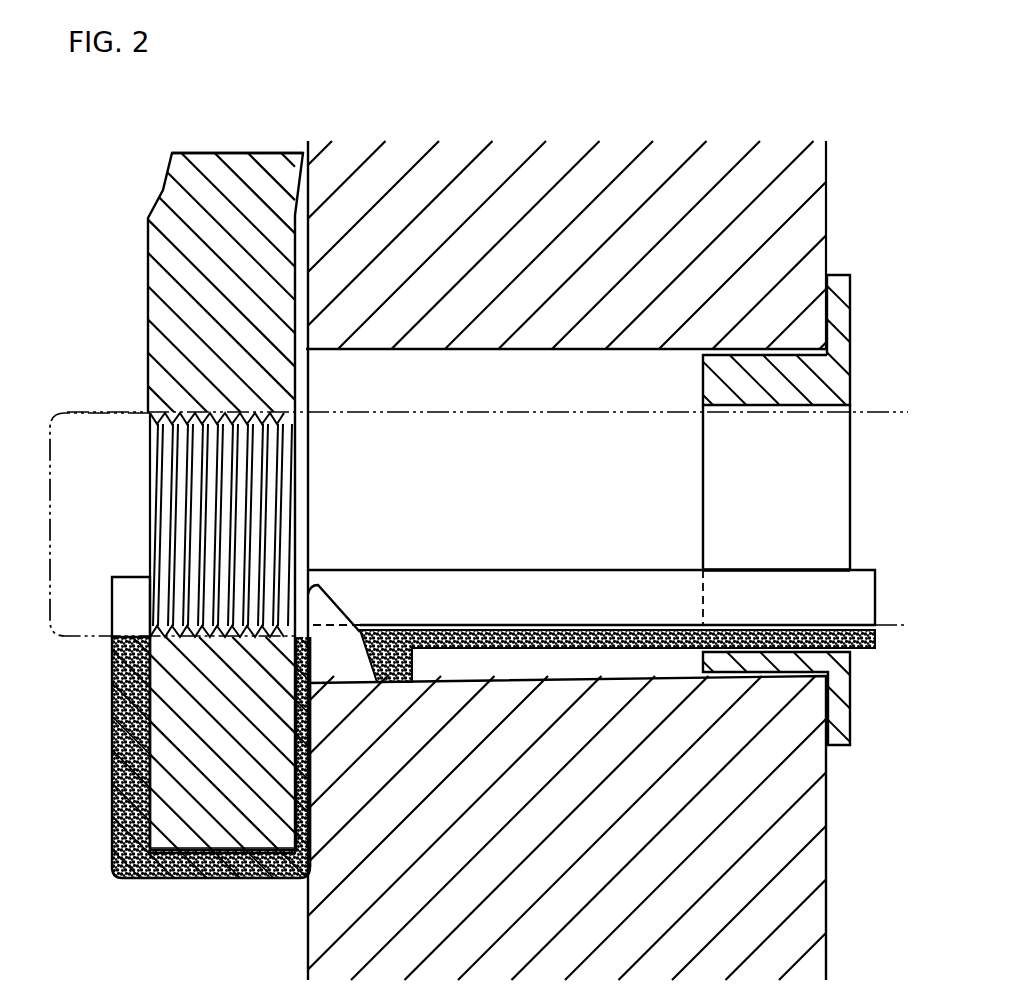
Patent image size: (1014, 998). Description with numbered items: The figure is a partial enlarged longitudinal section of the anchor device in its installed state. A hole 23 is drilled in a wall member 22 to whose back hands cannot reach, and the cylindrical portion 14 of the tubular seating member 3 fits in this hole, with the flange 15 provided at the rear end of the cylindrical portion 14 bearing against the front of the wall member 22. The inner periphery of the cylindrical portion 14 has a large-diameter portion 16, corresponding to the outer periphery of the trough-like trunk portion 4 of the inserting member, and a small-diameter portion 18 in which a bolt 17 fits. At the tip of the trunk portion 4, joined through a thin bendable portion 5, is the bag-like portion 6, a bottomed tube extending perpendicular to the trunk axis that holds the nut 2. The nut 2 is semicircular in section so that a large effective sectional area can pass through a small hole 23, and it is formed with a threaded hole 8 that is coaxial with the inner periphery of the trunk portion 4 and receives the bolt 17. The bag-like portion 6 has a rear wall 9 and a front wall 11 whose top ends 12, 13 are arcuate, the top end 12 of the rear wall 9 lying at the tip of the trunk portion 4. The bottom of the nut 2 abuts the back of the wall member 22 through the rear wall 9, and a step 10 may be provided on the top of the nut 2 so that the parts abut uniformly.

The nut 2 is at (149, 339).
The seating member 3 is at (810, 305).
The trough-like trunk portion 4 is at (858, 577).
The bendable portion 5 is at (320, 580).
The bag-like portion 6 is at (117, 830).
The threaded hole 8 is at (187, 424).
The rear wall 9 is at (292, 793).
The step 10 is at (290, 162).
The front wall 11 is at (122, 740).
The top end of the rear wall 12 is at (312, 620).
The top end of the front wall 13 is at (126, 630).
The cylindrical portion 14 is at (743, 363).
The flange 15 is at (840, 297).
The large-diameter portion 16 is at (842, 650).
The bolt 17 is at (653, 400).
The small-diameter portion 18 is at (822, 478).
The wall member 22 is at (410, 190).
The hole 23 is at (547, 354).